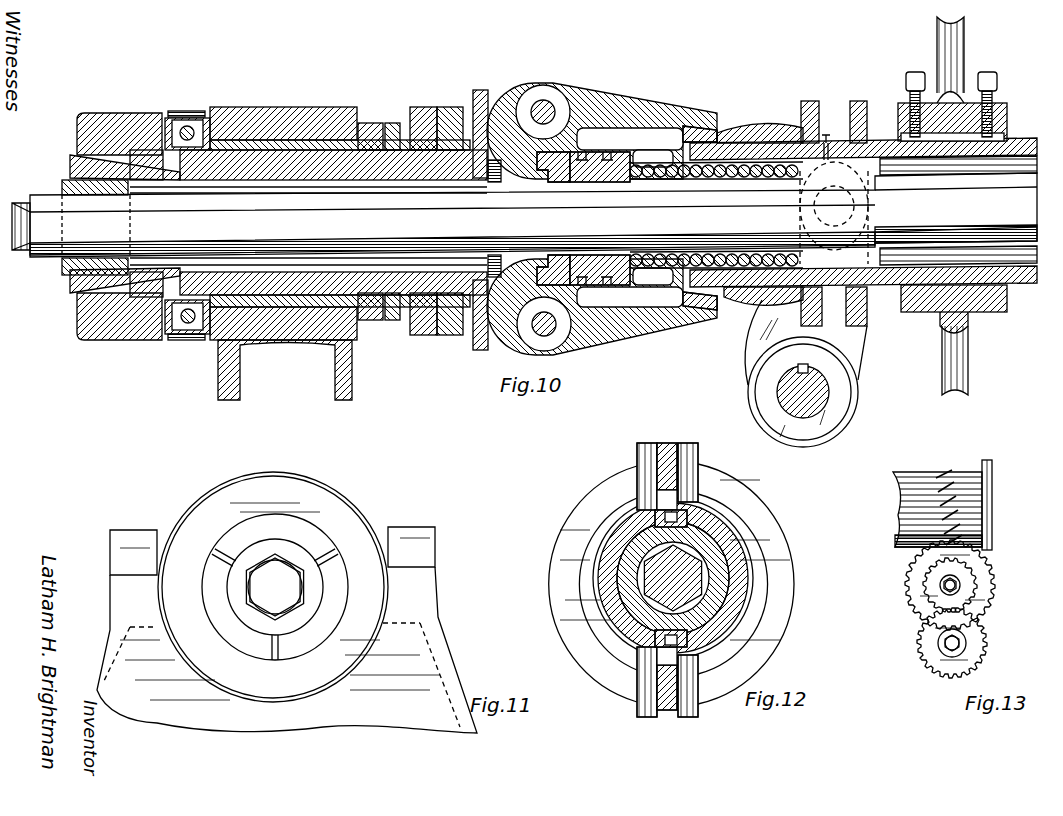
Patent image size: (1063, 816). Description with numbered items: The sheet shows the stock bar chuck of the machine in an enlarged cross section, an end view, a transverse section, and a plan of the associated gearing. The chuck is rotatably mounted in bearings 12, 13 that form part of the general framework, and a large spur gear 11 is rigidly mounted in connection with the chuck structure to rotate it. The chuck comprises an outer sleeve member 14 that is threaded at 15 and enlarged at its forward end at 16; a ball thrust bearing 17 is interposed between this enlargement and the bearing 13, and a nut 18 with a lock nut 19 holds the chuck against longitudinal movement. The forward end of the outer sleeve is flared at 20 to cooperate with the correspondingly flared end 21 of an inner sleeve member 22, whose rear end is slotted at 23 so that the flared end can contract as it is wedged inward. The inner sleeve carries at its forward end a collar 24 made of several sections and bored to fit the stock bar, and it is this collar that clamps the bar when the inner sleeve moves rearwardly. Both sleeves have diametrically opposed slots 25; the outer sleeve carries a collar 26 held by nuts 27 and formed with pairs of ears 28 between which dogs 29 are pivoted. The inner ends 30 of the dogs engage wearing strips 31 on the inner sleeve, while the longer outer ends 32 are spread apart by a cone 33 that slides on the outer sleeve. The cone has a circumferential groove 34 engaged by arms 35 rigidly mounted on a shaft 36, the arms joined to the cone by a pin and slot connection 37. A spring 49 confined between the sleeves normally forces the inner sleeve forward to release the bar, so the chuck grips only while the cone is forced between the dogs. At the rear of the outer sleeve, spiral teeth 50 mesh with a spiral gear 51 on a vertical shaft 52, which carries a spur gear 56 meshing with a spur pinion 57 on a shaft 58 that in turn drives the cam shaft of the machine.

In FIG. 10, the large spur gear 11 is at (978, 108).
In FIG. 10, the bearing 12 is at (591, 374).
In FIG. 10, the bearing 13 is at (282, 107).
In FIG. 11, the bearing 13 is at (196, 500).
In FIG. 10, the outer sleeve member 14 is at (1020, 138).
In FIG. 12, the outer sleeve member 14 is at (732, 536).
In FIG. 10, the threaded portion 15 is at (410, 125).
In FIG. 10, the enlargement 16 is at (103, 113).
In FIG. 11, the enlargement 16 is at (312, 500).
In FIG. 10, the ball thrust bearing 17 is at (188, 118).
In FIG. 10, the nut 18 is at (372, 123).
In FIG. 10, the lock nut 19 is at (391, 123).
In FIG. 10, the flared end 20 is at (125, 155).
In FIG. 10, the flared end 21 is at (142, 137).
In FIG. 10, the inner sleeve member 22 is at (395, 170).
In FIG. 10, the slots 23 is at (210, 205).
In FIG. 11, the slots 23 is at (322, 547).
In FIG. 12, the slots 23 is at (672, 578).
In FIG. 10, the collar 24 is at (62, 186).
In FIG. 11, the collar 24 is at (268, 545).
In FIG. 10, the slots 25 is at (652, 150).
In FIG. 12, the slots 25 is at (690, 505).
In FIG. 10, the collar 26 is at (480, 90).
In FIG. 12, the collar 26 is at (782, 565).
In FIG. 10, the nuts 27 is at (441, 107).
In FIG. 12, the ears 28 is at (690, 443).
In FIG. 10, the dogs 29 is at (622, 90).
In FIG. 12, the dogs 29 is at (660, 468).
In FIG. 10, the inner ends 30 is at (542, 182).
In FIG. 10, the wearing strips 31 is at (566, 186).
In FIG. 10, the outer ends 32 is at (712, 112).
In FIG. 10, the cone 33 is at (756, 126).
In FIG. 10, the circumferential groove 34 is at (824, 104).
In FIG. 10, the arms 35 is at (845, 376).
In FIG. 10, the shaft 36 is at (812, 392).
In FIG. 10, the pin and slot connection 37 is at (852, 198).
In FIG. 10, the spring 49 is at (662, 184).
In FIG. 13, the spiral teeth 50 is at (952, 470).
In FIG. 13, the spiral gear 51 is at (986, 570).
In FIG. 13, the vertical shaft 52 is at (930, 590).
In FIG. 13, the spur gear 56 is at (962, 585).
In FIG. 13, the spur pinion 57 is at (976, 640).
In FIG. 13, the shaft 58 is at (945, 645).